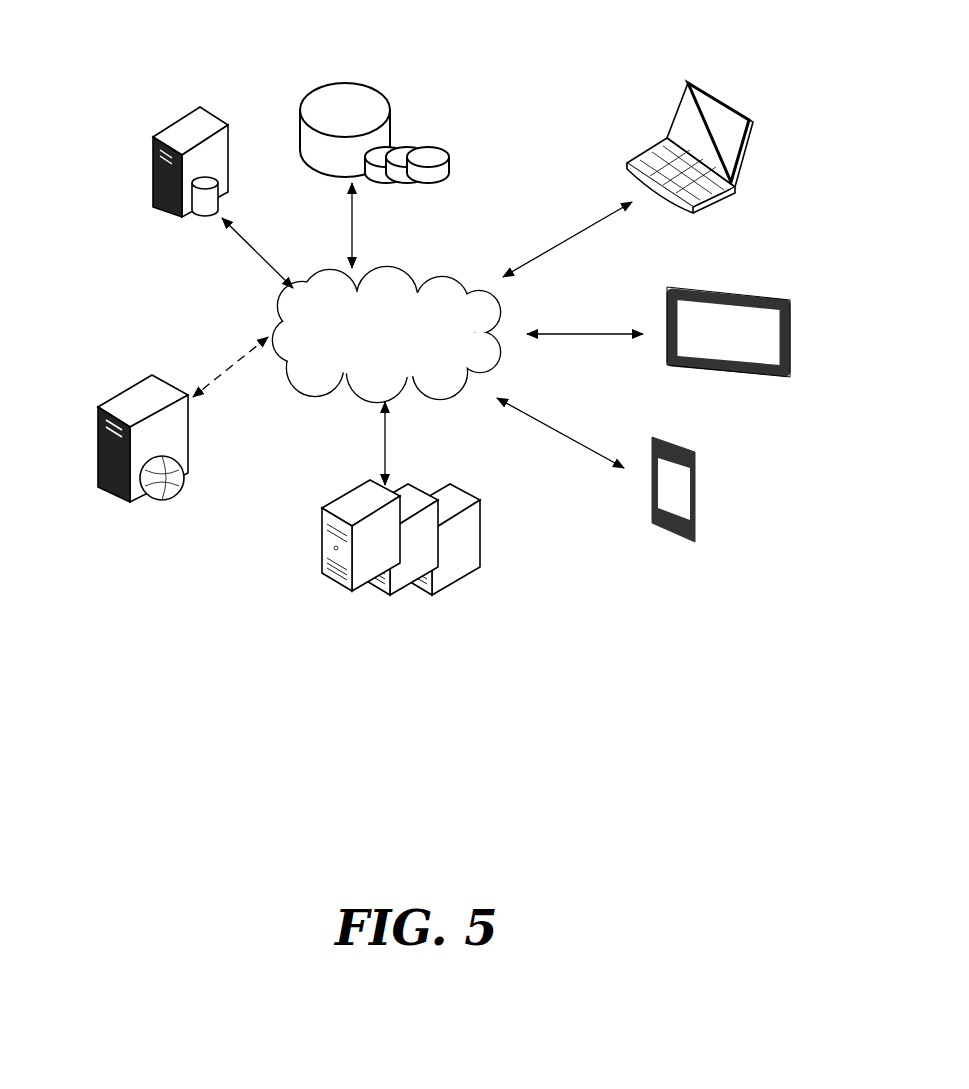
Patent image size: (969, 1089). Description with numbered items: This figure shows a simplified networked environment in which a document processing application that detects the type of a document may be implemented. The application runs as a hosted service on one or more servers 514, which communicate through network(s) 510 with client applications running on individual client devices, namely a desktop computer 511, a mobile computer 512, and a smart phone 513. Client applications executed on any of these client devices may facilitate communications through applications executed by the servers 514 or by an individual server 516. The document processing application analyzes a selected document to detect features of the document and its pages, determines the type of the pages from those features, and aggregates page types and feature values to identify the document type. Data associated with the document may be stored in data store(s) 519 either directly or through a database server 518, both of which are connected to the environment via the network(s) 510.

The network(s) 510 is at (390, 257).
The desktop computer 511 is at (727, 85).
The mobile computer 512 is at (764, 272).
The smart phone 513 is at (704, 456).
The servers 514 is at (349, 486).
The individual server 516 is at (121, 386).
The database server 518 is at (190, 225).
The data store(s) 519 is at (360, 62).